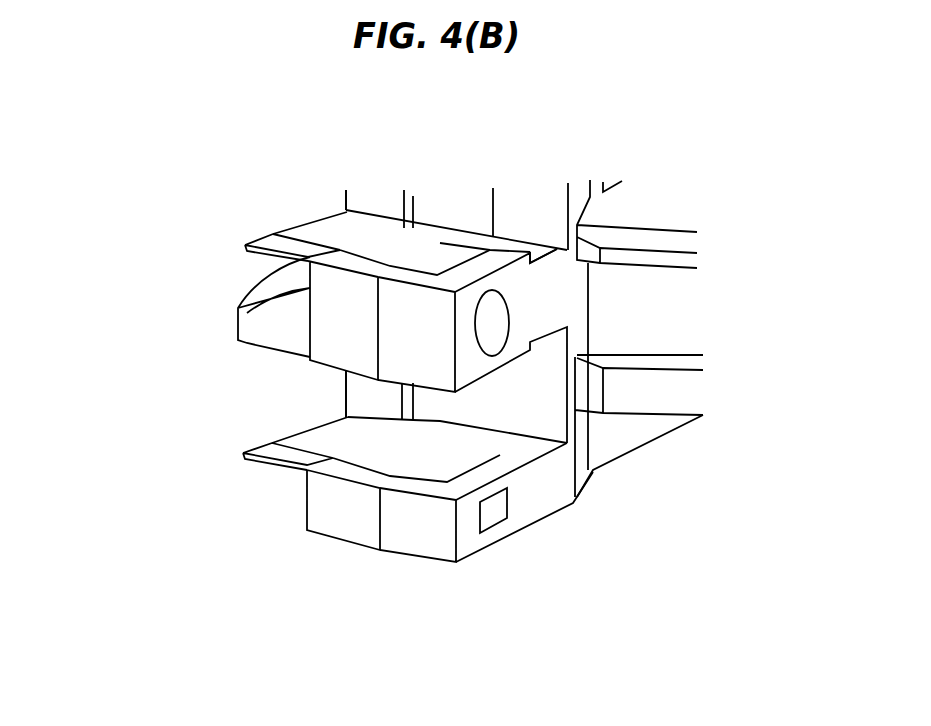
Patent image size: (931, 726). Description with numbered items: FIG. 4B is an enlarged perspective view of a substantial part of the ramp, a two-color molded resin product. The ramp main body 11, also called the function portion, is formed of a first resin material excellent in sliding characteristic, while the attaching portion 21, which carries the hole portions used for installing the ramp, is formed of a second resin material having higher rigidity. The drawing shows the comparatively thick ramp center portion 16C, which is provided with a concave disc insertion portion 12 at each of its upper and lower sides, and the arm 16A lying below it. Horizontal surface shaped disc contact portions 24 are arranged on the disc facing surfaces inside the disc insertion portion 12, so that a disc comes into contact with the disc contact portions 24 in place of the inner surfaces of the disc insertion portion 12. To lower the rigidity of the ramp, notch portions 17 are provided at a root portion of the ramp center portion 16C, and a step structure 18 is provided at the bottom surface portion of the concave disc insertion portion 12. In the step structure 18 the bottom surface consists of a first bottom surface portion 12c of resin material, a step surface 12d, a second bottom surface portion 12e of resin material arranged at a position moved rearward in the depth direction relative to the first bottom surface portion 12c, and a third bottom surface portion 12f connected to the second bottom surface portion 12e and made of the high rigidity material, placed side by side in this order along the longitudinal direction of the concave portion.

The ramp main body 11 is at (321, 528).
The disc insertion portion 12 is at (335, 210).
The first bottom surface portion 12c is at (377, 203).
The step surface 12d is at (417, 200).
The second bottom surface portion 12e is at (460, 203).
The third bottom surface portion 12f is at (528, 200).
The lower arm 16A is at (400, 560).
The ramp center portion 16C is at (327, 310).
The notch portion 17 is at (550, 342).
The step structure 18 is at (418, 212).
The attaching portion 21 is at (653, 436).
The disc contact portion 24 is at (387, 252).